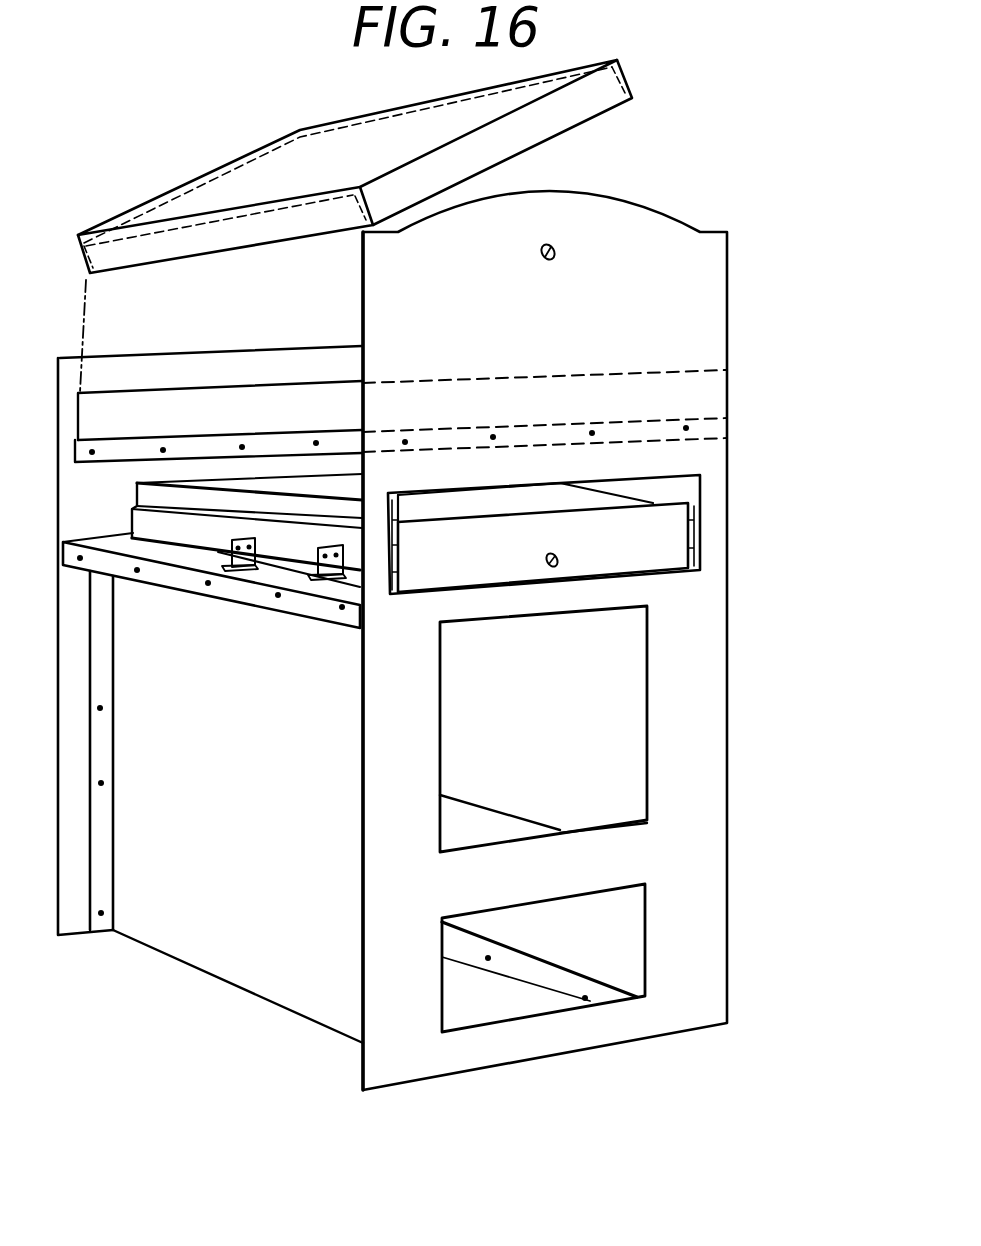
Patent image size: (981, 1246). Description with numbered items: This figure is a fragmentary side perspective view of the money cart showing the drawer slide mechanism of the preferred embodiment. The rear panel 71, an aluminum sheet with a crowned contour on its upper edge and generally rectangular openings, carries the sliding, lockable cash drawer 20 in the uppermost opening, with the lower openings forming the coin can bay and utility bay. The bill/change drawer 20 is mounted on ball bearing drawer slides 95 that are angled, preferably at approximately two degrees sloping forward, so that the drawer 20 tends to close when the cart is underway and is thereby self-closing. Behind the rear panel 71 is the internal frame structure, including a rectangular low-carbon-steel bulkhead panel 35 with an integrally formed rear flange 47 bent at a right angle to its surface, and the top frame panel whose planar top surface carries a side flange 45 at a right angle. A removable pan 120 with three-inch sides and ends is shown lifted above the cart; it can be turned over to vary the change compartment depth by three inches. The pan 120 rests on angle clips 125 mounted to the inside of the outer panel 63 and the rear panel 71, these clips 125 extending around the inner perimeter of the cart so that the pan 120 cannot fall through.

The cash drawer 20 is at (658, 541).
The bulkhead panel 35 is at (245, 950).
The side flange 45 is at (258, 593).
The rear flange 47 is at (107, 757).
The outer panel 63 is at (278, 370).
The rear panel 71 is at (680, 745).
The drawer slide 95 is at (200, 532).
The removable pan 120 is at (125, 415).
The angle clip 125 is at (210, 640).